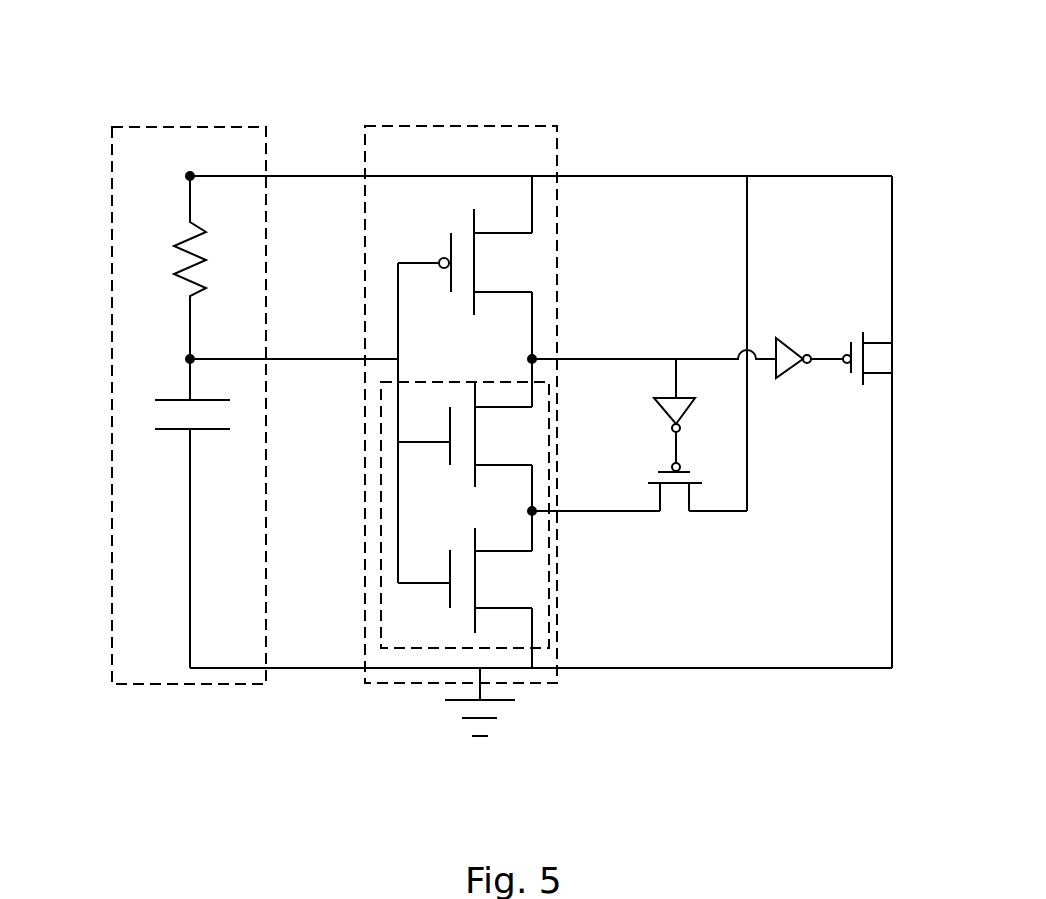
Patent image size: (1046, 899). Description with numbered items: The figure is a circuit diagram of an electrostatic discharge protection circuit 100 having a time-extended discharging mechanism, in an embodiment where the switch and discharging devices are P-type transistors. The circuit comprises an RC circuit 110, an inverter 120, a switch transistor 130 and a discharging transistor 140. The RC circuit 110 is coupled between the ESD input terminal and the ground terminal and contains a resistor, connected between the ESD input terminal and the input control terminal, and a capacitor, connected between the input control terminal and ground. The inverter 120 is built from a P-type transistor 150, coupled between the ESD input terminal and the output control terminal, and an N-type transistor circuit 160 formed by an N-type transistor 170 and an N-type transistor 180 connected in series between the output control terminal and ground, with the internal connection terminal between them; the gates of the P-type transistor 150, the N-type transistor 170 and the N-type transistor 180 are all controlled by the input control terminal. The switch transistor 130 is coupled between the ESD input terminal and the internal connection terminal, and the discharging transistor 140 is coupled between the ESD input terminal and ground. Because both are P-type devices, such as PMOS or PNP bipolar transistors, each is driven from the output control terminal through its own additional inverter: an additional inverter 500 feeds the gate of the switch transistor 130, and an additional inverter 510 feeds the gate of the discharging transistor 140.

The electrostatic discharge protection circuit 100 is at (907, 43).
The RC circuit 110 is at (112, 152).
The inverter 120 is at (365, 152).
The switch transistor 130 is at (672, 519).
The discharging transistor 140 is at (893, 354).
The P-type transistor 150 is at (532, 264).
The N-type transistor circuit 160 is at (381, 515).
The N-type transistor 170 is at (520, 436).
The N-type transistor 180 is at (520, 579).
The additional inverter 500 is at (660, 418).
The additional inverter 510 is at (798, 337).